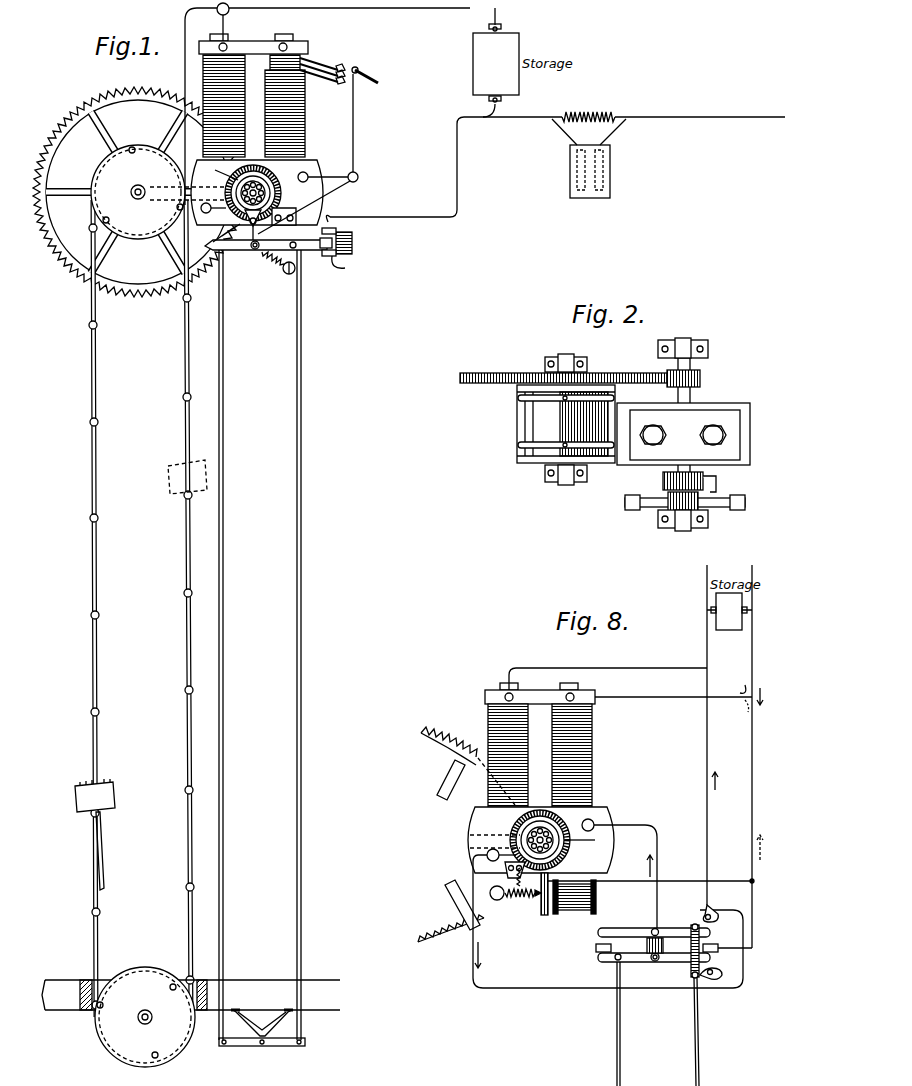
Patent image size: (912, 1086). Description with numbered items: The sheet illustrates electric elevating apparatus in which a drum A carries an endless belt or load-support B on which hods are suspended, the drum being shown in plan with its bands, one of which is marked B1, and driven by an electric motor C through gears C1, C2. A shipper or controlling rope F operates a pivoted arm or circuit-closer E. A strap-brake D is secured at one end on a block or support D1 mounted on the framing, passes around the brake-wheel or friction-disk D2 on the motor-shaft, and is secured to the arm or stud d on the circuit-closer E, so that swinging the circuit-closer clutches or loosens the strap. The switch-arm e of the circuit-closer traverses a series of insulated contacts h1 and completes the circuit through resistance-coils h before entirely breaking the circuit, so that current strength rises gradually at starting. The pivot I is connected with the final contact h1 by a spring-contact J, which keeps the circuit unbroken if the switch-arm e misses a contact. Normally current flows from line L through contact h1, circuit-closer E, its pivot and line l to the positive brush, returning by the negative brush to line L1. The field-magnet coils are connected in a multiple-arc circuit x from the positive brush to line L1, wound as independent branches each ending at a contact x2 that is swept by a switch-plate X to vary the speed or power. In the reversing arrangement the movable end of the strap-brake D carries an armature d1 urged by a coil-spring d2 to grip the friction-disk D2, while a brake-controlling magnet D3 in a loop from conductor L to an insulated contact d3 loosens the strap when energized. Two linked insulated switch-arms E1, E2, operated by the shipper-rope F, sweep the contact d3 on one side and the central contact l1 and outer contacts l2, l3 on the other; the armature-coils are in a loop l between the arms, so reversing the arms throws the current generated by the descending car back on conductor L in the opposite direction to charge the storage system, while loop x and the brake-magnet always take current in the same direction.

In FIG. 1, the drum A is at (138, 192).
In FIG. 2, the drum A is at (566, 424).
In FIG. 1, the endless belt or load-support B is at (139, 608).
In FIG. 2, the endless belt or load-support B is at (557, 448).
In FIG. 2, the chain band B1 is at (614, 398).
In FIG. 1, the electric motor C is at (253, 95).
In FIG. 2, the electric motor C is at (683, 434).
In FIG. 8, the electric motor C is at (540, 745).
In FIG. 1, the gear C1 is at (102, 98).
In FIG. 2, the gear C1 is at (532, 375).
In FIG. 8, the gear C1 is at (466, 847).
In FIG. 2, the gear C2 is at (700, 379).
In FIG. 1, the strap-brake D is at (281, 196).
In FIG. 2, the strap-brake D is at (663, 483).
In FIG. 8, the strap-brake D is at (572, 858).
In FIG. 1, the block or support D1 is at (294, 210).
In FIG. 2, the block or support D1 is at (716, 478).
In FIG. 8, the block or support D1 is at (504, 871).
In FIG. 1, the brake-wheel or friction-disk D2 is at (224, 170).
In FIG. 2, the brake-wheel or friction-disk D2 is at (700, 496).
In FIG. 8, the brake-wheel or friction-disk D2 is at (589, 835).
In FIG. 8, the brake-controlling magnet D3 is at (596, 897).
In FIG. 1, the arm or stud d is at (249, 225).
In FIG. 8, the armature d1 is at (548, 915).
In FIG. 8, the coil-spring d2 is at (515, 901).
In FIG. 8, the insulated contact d3 is at (596, 948).
In FIG. 1, the circuit-closer E is at (266, 260).
In FIG. 8, the switch-arm E1 is at (654, 925).
In FIG. 8, the switch-arm E2 is at (654, 947).
In FIG. 1, the switch-arm e is at (315, 249).
In FIG. 1, the shipper or controlling rope F is at (298, 492).
In FIG. 8, the shipper or controlling rope F is at (706, 1026).
In FIG. 1, the resistance-coils h is at (352, 244).
In FIG. 1, the insulated contacts h1 is at (347, 247).
In FIG. 1, the pivot I is at (226, 249).
In FIG. 1, the spring-contact J is at (295, 270).
In FIG. 1, the line L is at (555, 167).
In FIG. 8, the line L is at (757, 749).
In FIG. 1, the line L1 is at (310, 106).
In FIG. 8, the line L1 is at (703, 727).
In FIG. 1, the line l is at (304, 207).
In FIG. 8, the line l is at (612, 908).
In FIG. 8, the central contact l1 is at (718, 946).
In FIG. 8, the contact l2 is at (704, 908).
In FIG. 8, the contact l3 is at (722, 968).
In FIG. 1, the switch-plate X is at (339, 61).
In FIG. 1, the line x is at (292, 67).
In FIG. 8, the line x is at (630, 682).
In FIG. 1, the contact x2 is at (346, 128).